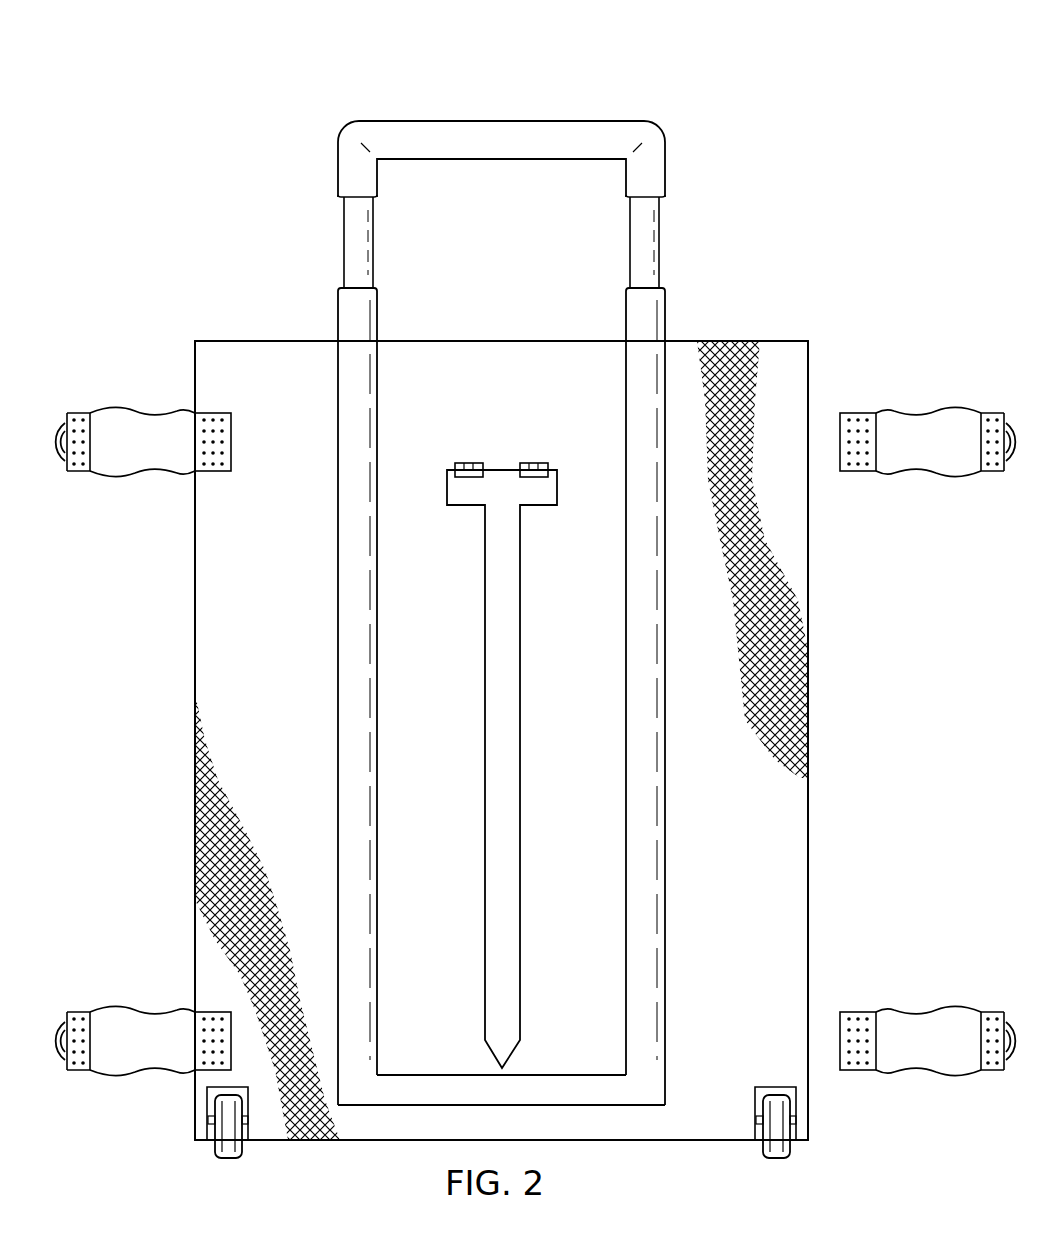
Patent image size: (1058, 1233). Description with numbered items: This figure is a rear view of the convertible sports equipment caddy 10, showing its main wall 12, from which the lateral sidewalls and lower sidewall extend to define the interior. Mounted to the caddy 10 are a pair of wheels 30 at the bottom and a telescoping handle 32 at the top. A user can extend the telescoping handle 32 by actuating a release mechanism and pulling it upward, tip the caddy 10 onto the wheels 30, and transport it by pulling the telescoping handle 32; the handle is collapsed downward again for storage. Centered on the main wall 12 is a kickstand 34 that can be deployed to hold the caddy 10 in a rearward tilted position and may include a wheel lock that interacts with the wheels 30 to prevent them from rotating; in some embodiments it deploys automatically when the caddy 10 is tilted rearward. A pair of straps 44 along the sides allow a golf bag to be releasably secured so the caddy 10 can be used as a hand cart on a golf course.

The convertible sports equipment caddy 10 is at (172, 74).
The main wall 12 is at (264, 365).
The wheels 30 is at (228, 1161).
The telescoping handle 32 is at (437, 104).
The kickstand 34 is at (484, 773).
The straps 44 is at (118, 406).